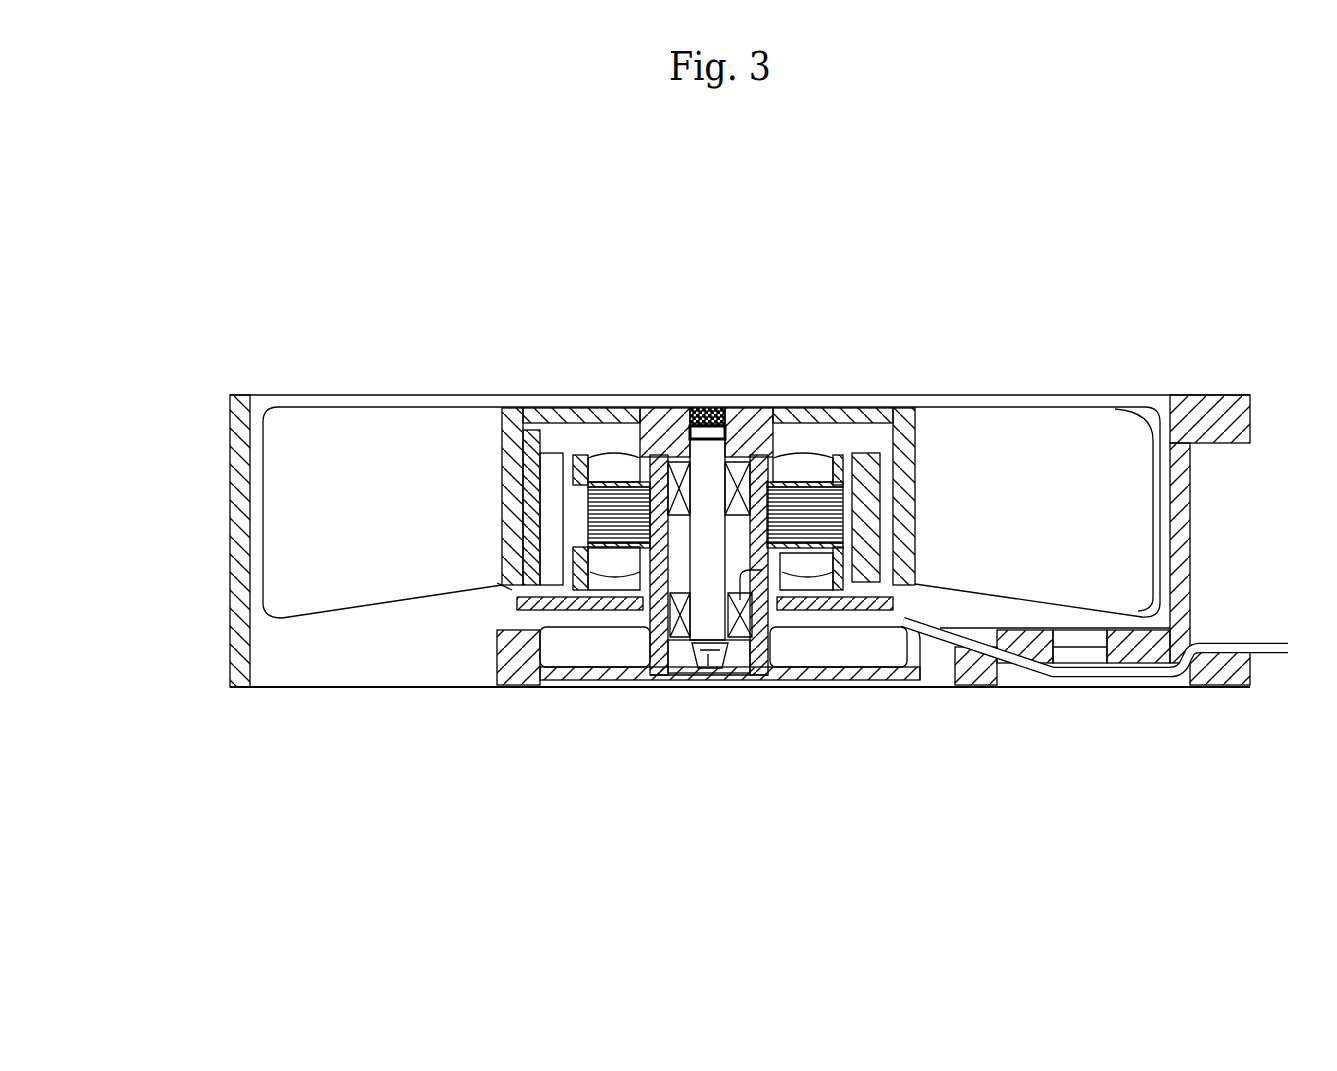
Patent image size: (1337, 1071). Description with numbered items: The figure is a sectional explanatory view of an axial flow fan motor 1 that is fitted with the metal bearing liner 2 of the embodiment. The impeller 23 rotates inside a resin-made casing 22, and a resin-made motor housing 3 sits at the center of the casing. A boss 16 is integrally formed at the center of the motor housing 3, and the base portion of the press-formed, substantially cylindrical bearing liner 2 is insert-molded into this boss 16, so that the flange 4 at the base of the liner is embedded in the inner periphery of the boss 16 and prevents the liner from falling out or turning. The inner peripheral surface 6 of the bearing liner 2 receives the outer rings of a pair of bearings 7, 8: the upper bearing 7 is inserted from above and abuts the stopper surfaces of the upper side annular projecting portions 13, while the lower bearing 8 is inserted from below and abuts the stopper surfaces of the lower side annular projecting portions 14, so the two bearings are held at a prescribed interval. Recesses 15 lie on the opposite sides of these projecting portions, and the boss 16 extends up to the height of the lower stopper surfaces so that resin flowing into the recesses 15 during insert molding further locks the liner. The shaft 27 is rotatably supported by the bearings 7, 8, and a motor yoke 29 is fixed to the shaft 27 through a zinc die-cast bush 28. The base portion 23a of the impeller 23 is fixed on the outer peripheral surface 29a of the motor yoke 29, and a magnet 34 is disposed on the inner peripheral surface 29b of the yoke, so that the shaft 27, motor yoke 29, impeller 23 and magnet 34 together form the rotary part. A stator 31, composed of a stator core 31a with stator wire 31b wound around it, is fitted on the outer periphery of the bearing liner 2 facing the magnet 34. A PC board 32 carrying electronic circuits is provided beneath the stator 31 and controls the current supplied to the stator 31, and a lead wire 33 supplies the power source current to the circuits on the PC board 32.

The axial flow fan motor 1 is at (1000, 296).
The metal bearing liner 2 is at (730, 646).
The motor housing 3 is at (474, 650).
The flange 4 is at (655, 652).
The inner peripheral surface 6 is at (680, 658).
The bearing 7 is at (688, 666).
The bearing 8 is at (740, 467).
The upper side annular projecting portions 13 is at (660, 445).
The lower side annular projecting portions 14 is at (815, 603).
The recesses 15 is at (607, 455).
The boss 16 is at (632, 658).
The casing 22 is at (226, 468).
The impeller 23 is at (332, 404).
The base portion 23a is at (513, 417).
The shaft 27 is at (708, 662).
The bush 28 is at (738, 425).
The motor yoke 29 is at (812, 467).
The outer peripheral surface 29a is at (497, 507).
The inner peripheral surface 29b is at (518, 462).
The stator 31 is at (597, 434).
The stator core 31a is at (852, 500).
The stator wire 31b is at (825, 415).
The PC board 32 is at (847, 606).
The lead wire 33 is at (1247, 641).
The magnet 34 is at (505, 585).